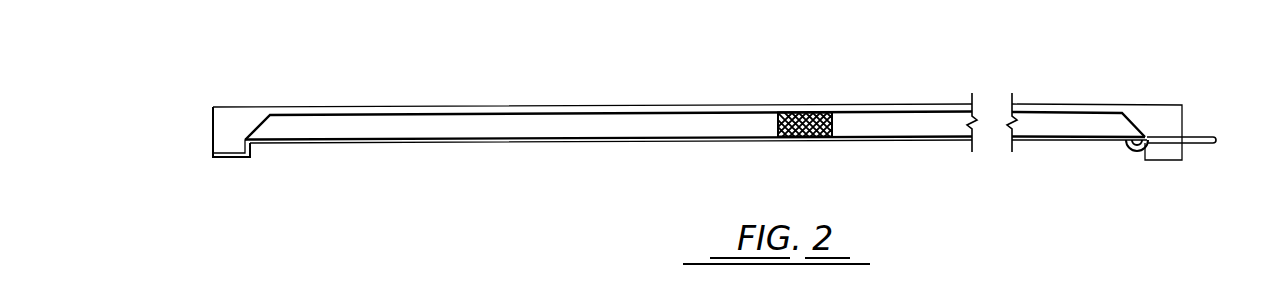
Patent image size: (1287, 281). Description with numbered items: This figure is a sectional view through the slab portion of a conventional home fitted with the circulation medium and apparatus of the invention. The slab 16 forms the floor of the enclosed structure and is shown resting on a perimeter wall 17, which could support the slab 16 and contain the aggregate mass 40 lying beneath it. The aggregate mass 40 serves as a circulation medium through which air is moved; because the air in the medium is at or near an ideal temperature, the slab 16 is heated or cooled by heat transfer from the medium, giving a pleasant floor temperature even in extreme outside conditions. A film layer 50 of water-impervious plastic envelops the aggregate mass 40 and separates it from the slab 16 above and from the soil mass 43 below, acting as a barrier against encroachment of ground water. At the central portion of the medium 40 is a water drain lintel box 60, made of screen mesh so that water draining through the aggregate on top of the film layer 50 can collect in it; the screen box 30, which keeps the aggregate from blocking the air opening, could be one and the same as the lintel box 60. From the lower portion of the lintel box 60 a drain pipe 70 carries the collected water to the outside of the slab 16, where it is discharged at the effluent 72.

The slab 16 is at (393, 113).
The perimeter wall 17 is at (223, 139).
The screen box 30 is at (834, 144).
The aggregate mass 40 is at (650, 118).
The soil mass 43 is at (722, 133).
The film layer 50 is at (457, 141).
The water drain lintel box 60 is at (815, 137).
The drain pipe 70 is at (1134, 152).
The effluent 72 is at (1212, 137).